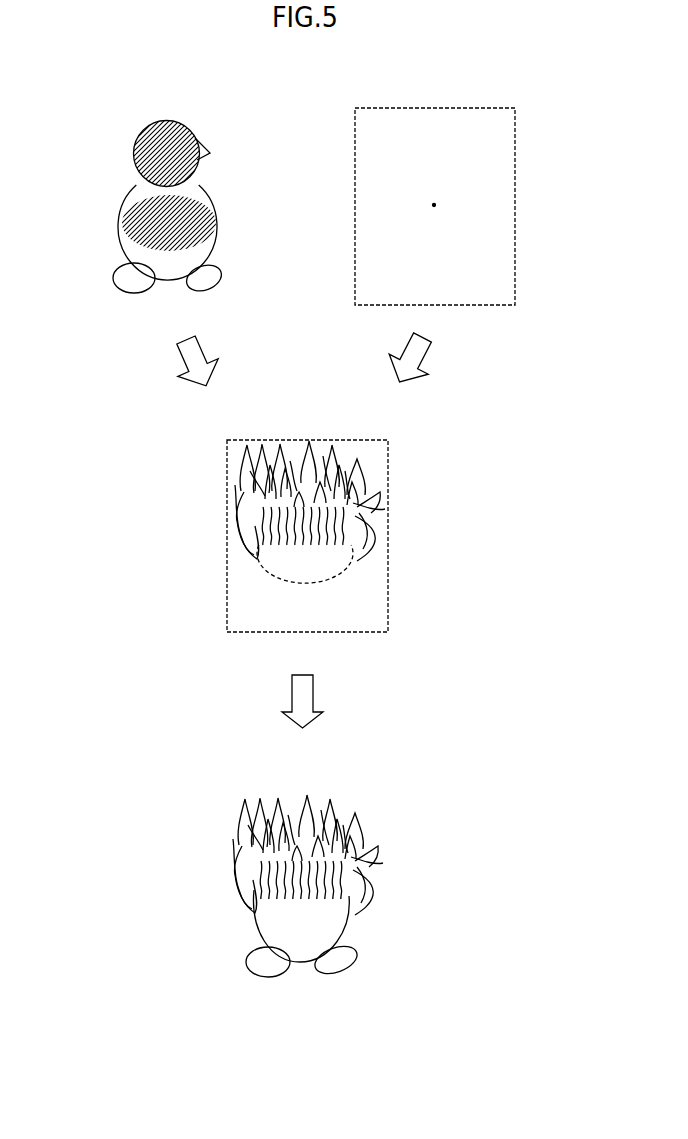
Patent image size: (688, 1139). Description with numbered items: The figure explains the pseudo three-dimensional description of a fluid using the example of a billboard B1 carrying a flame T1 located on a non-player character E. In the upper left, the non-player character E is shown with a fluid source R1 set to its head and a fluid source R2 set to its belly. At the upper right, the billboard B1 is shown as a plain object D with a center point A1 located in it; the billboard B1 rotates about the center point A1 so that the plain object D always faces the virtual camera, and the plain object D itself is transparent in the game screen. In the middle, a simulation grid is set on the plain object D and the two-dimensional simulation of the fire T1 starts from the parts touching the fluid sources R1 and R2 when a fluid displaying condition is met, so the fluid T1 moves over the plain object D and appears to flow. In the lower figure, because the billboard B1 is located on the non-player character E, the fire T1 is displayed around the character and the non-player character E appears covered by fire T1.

The non-player character E is at (127, 193).
The fluid source R1 is at (182, 118).
The fluid source R2 is at (120, 243).
The billboard B1 is at (492, 104).
The plain object D is at (517, 142).
The center point A1 is at (434, 205).
The fluid (fire, flame) T1 is at (230, 508).